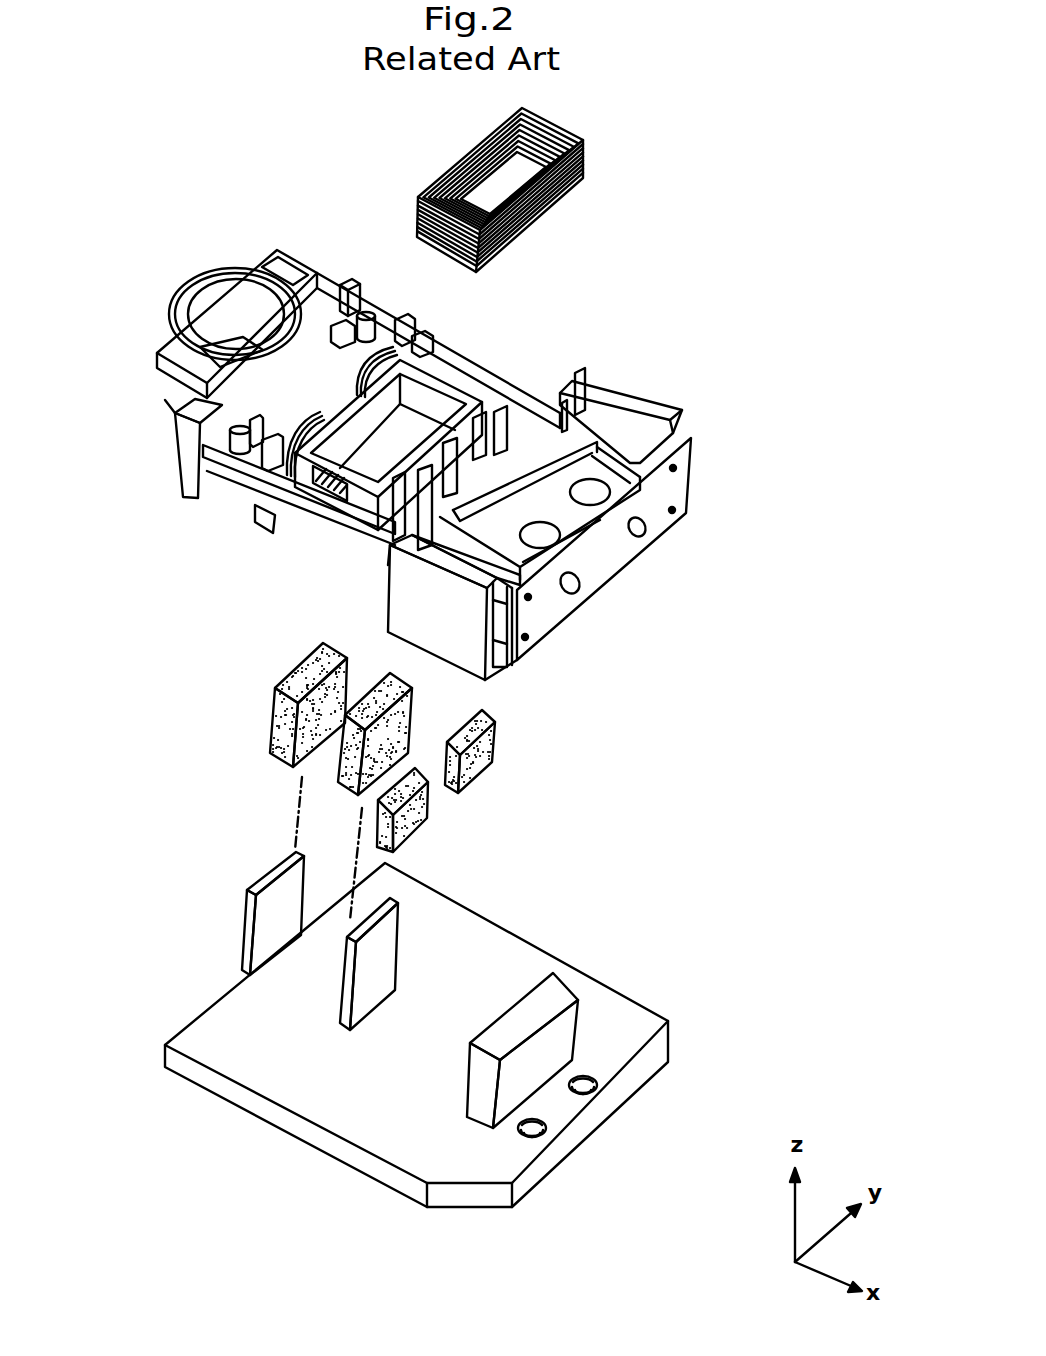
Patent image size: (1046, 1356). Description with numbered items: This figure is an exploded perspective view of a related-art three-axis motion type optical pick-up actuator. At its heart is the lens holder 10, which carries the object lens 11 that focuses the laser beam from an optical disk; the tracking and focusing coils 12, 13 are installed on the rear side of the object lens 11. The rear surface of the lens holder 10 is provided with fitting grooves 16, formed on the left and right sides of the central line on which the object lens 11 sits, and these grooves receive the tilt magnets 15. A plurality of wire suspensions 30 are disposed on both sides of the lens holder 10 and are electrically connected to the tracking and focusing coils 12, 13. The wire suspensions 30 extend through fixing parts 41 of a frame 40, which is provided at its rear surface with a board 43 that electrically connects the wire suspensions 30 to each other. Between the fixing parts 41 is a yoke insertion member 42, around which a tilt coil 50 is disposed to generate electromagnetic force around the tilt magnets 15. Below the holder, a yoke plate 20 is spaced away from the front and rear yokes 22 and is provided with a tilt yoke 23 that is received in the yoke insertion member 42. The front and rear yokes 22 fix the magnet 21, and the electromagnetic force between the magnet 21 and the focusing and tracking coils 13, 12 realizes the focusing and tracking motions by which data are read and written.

The lens holder 10 is at (447, 363).
The object lens 11 is at (218, 300).
The tracking coil 12 is at (307, 437).
The focusing coil 13 is at (318, 490).
The tilt magnets 15 is at (405, 822).
The fitting grooves 16 is at (513, 497).
The yoke plate 20 is at (570, 945).
The magnet 21 is at (362, 762).
The front and rear yokes 22 is at (338, 993).
The tilt yoke 23 is at (530, 1007).
The wire suspensions 30 is at (510, 393).
The frame 40 is at (505, 680).
The fixing parts 41 is at (647, 440).
The yoke insertion member 42 is at (530, 487).
The board 43 is at (593, 573).
The tilt coil 50 is at (570, 172).